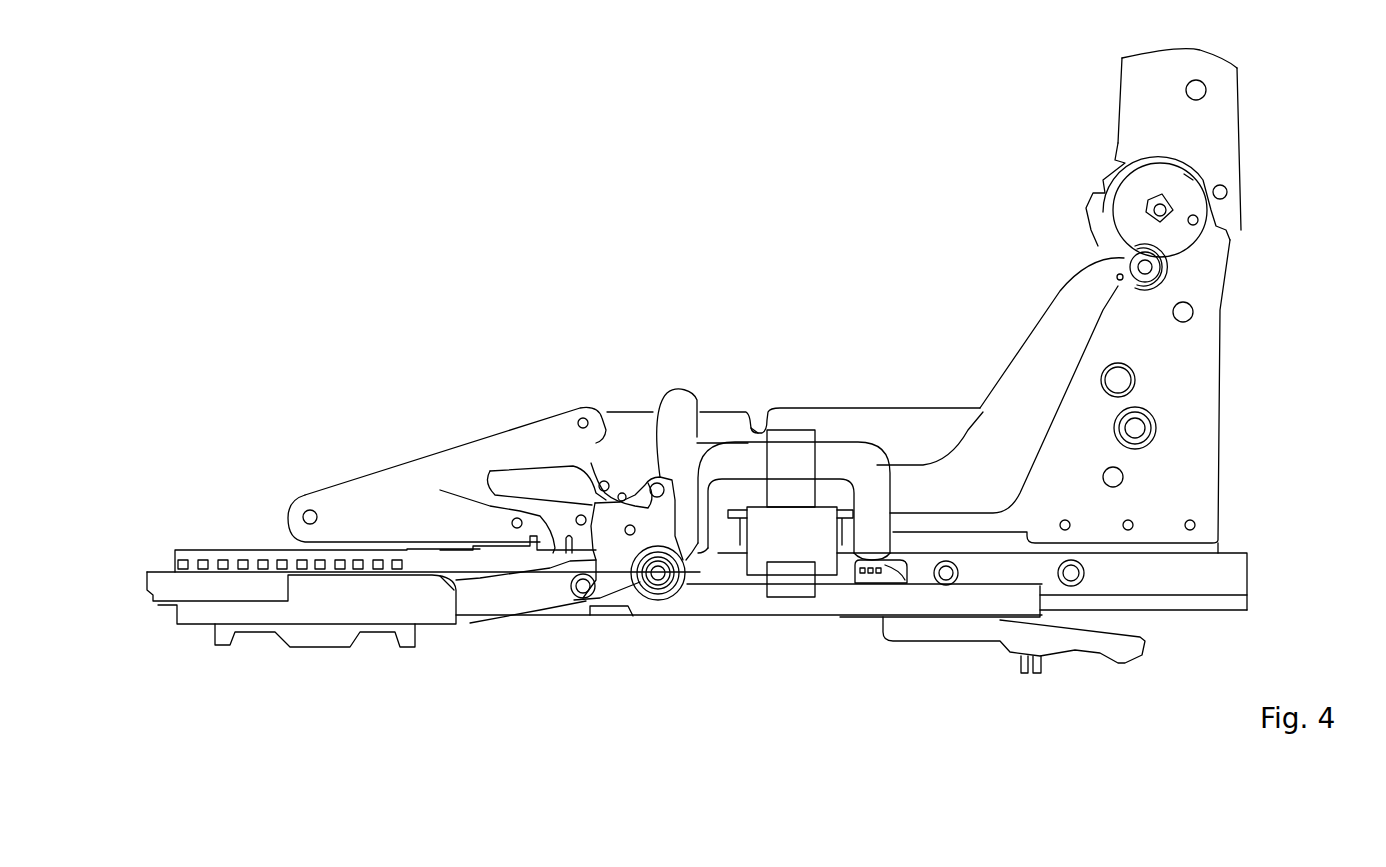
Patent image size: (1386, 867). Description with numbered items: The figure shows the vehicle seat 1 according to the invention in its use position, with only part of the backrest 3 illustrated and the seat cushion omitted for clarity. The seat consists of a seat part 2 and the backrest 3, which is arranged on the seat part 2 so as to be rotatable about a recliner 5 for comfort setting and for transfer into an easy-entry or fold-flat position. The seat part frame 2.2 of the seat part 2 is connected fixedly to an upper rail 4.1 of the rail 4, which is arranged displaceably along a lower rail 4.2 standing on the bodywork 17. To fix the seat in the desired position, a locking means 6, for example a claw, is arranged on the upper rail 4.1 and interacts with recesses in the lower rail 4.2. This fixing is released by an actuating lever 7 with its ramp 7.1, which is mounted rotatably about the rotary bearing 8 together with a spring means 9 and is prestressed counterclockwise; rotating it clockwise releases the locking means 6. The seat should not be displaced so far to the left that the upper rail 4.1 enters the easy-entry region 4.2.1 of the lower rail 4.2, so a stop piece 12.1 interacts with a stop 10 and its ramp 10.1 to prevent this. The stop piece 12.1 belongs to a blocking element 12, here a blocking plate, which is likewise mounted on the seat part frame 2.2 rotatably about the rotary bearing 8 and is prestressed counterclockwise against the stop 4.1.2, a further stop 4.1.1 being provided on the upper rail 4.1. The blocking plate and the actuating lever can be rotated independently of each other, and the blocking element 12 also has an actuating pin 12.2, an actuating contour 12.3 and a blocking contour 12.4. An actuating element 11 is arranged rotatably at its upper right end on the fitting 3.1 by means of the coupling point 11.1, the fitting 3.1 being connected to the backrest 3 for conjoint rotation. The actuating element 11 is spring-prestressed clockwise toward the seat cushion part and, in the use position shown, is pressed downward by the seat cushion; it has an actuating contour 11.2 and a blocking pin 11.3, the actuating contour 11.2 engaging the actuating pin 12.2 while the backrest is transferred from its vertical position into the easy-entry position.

The vehicle seat 1 is at (808, 146).
The seat part 2 is at (688, 208).
The seat part frame 2.2 is at (370, 492).
The backrest 3 is at (1148, 98).
The fitting 3.1 is at (1185, 238).
The rail 4 is at (1253, 475).
The upper rail 4.1 is at (1236, 573).
The stop 4.1.1 is at (563, 545).
The stop 4.1.2 is at (633, 605).
The lower rail 4.2 is at (1233, 603).
The easy-entry region of the lower rail 4.2.1 is at (200, 550).
The recliner 5 is at (1052, 155).
The locking means 6 is at (877, 582).
The actuating lever 7 is at (490, 600).
The ramp 7.1 is at (752, 428).
The rotary bearing 8 is at (660, 582).
The spring means 9 is at (683, 575).
The stop 10 is at (385, 602).
The ramp 10.1 is at (447, 592).
The actuating element 11 is at (1055, 337).
The coupling point 11.1 is at (1140, 267).
The actuating contour 11.2 is at (632, 500).
The blocking pin 11.3 is at (603, 480).
The blocking element 12 is at (607, 578).
The stop piece 12.1 is at (583, 600).
The actuating pin 12.2 is at (658, 483).
The actuating contour 12.3 is at (624, 505).
The blocking contour 12.4 is at (595, 477).
The bodywork 17 is at (312, 635).